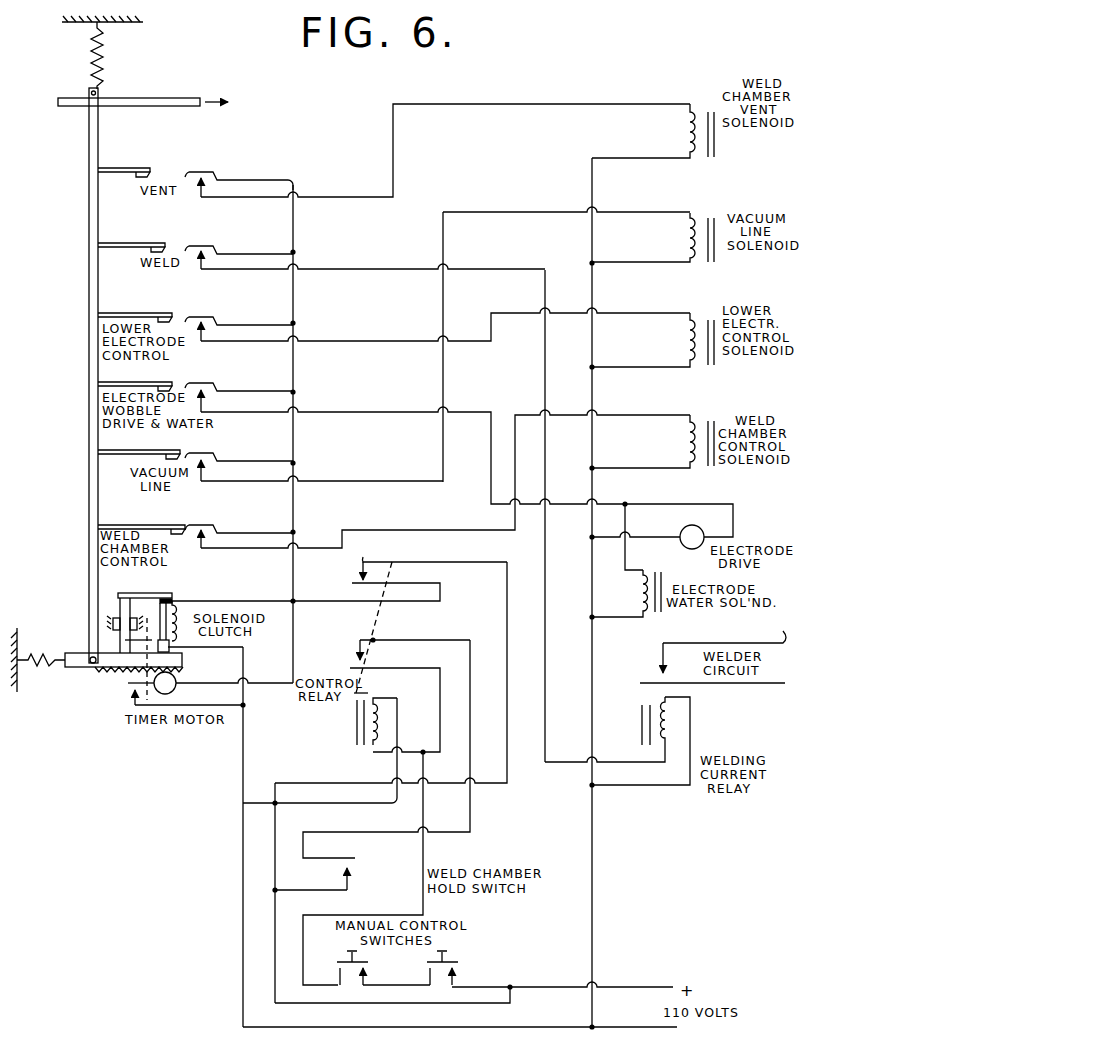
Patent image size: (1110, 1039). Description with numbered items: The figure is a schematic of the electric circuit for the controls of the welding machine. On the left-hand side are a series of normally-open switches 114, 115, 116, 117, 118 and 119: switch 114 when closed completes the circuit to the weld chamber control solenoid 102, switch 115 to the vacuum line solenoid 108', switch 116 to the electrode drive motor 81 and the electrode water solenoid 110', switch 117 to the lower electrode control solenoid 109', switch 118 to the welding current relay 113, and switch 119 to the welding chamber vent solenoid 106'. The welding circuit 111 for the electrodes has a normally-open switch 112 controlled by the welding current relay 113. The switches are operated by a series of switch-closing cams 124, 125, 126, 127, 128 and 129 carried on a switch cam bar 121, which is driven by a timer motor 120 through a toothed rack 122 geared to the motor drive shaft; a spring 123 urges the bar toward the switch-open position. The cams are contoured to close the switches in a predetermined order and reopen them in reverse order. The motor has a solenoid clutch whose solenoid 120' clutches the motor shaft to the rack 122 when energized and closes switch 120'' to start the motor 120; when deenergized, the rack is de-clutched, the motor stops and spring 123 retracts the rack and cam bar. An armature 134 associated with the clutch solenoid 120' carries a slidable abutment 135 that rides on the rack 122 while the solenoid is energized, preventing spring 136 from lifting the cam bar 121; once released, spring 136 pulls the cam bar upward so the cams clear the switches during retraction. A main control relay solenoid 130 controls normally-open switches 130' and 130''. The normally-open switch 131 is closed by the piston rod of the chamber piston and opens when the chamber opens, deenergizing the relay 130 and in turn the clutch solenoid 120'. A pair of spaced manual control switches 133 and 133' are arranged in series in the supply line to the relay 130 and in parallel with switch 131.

The spring 136 is at (104, 56).
The switch cam bar 121 is at (88, 497).
The switch-closing cam 129 is at (138, 178).
The switch-closing cam 128 is at (142, 250).
The switch-closing cam 127 is at (160, 316).
The switch-closing cam 126 is at (160, 382).
The switch-closing cam 125 is at (152, 456).
The switch-closing cam 124 is at (166, 528).
The normally-open switch 119 is at (239, 186).
The normally-open switch 118 is at (239, 258).
The normally-open switch 117 is at (239, 330).
The normally-open switch 116 is at (239, 398).
The normally-open switch 115 is at (239, 467).
The normally-open switch 114 is at (239, 537).
The armature 134 is at (140, 593).
The slidable abutment 135 is at (122, 640).
The clutch solenoid 120' is at (185, 607).
The toothed rack 122 is at (110, 672).
The spring 123 is at (36, 672).
The timer motor 120 is at (185, 689).
The motor switch 120'' is at (106, 711).
The vent valve solenoid 106' is at (655, 112).
The vacuum line solenoid 108' is at (657, 219).
The lower electrode control solenoid 109' is at (653, 321).
The weld chamber control solenoid 102 is at (698, 420).
The electrode drive motor 81 is at (682, 530).
The electrode water solenoid 110' is at (631, 581).
The welding circuit 111 is at (728, 633).
The normally-open switch 112 is at (660, 676).
The welding current relay 113 is at (667, 730).
The main control relay solenoid 130 is at (358, 733).
The normally-open switch 130' is at (386, 637).
The normally-open switch 130'' is at (430, 614).
The normally-open switch 131 is at (355, 866).
The manual control switch 133 is at (335, 961).
The manual control switch 133' is at (471, 964).